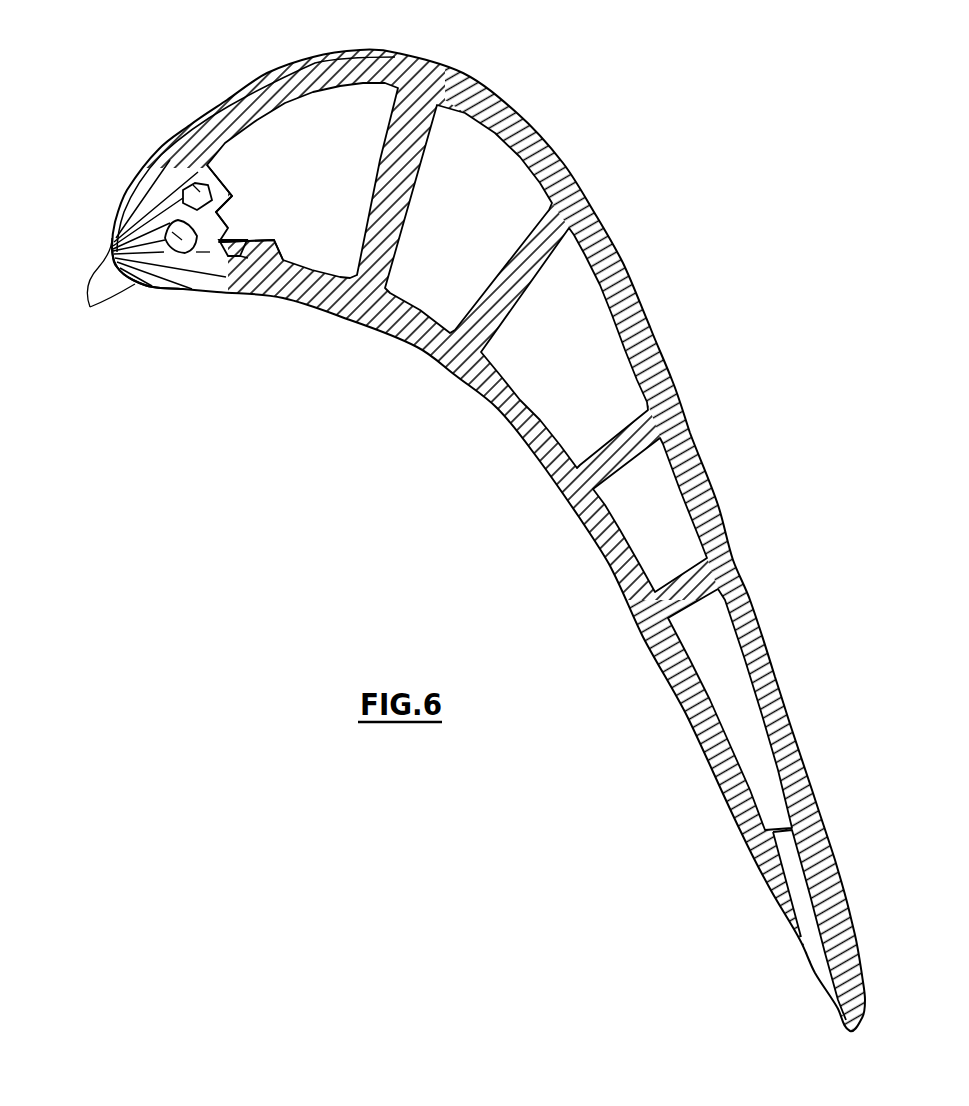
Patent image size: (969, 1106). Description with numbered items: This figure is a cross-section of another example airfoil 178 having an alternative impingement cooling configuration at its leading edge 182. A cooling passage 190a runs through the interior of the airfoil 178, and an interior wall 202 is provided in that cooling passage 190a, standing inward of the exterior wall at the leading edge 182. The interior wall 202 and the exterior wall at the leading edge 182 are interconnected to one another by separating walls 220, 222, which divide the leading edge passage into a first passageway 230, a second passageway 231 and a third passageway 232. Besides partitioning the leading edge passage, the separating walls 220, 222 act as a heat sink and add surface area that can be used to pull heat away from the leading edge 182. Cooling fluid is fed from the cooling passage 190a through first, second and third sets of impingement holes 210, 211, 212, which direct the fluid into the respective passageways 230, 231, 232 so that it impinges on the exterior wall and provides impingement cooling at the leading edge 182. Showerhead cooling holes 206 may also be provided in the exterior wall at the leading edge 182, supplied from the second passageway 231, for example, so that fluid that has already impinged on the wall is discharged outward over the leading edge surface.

The airfoil 178 is at (580, 144).
The leading edge 182 is at (165, 292).
The cooling passage 190a is at (353, 113).
The interior wall 202 is at (270, 238).
The showerhead cooling holes 206 is at (90, 307).
The first set of impingement holes 210 is at (232, 240).
The second set of impingement holes 211 is at (223, 213).
The third set of impingement holes 212 is at (237, 190).
The separating wall 220 is at (203, 248).
The separating wall 222 is at (177, 212).
The first passageway 230 is at (245, 255).
The second passageway 231 is at (172, 232).
The third passageway 232 is at (193, 185).